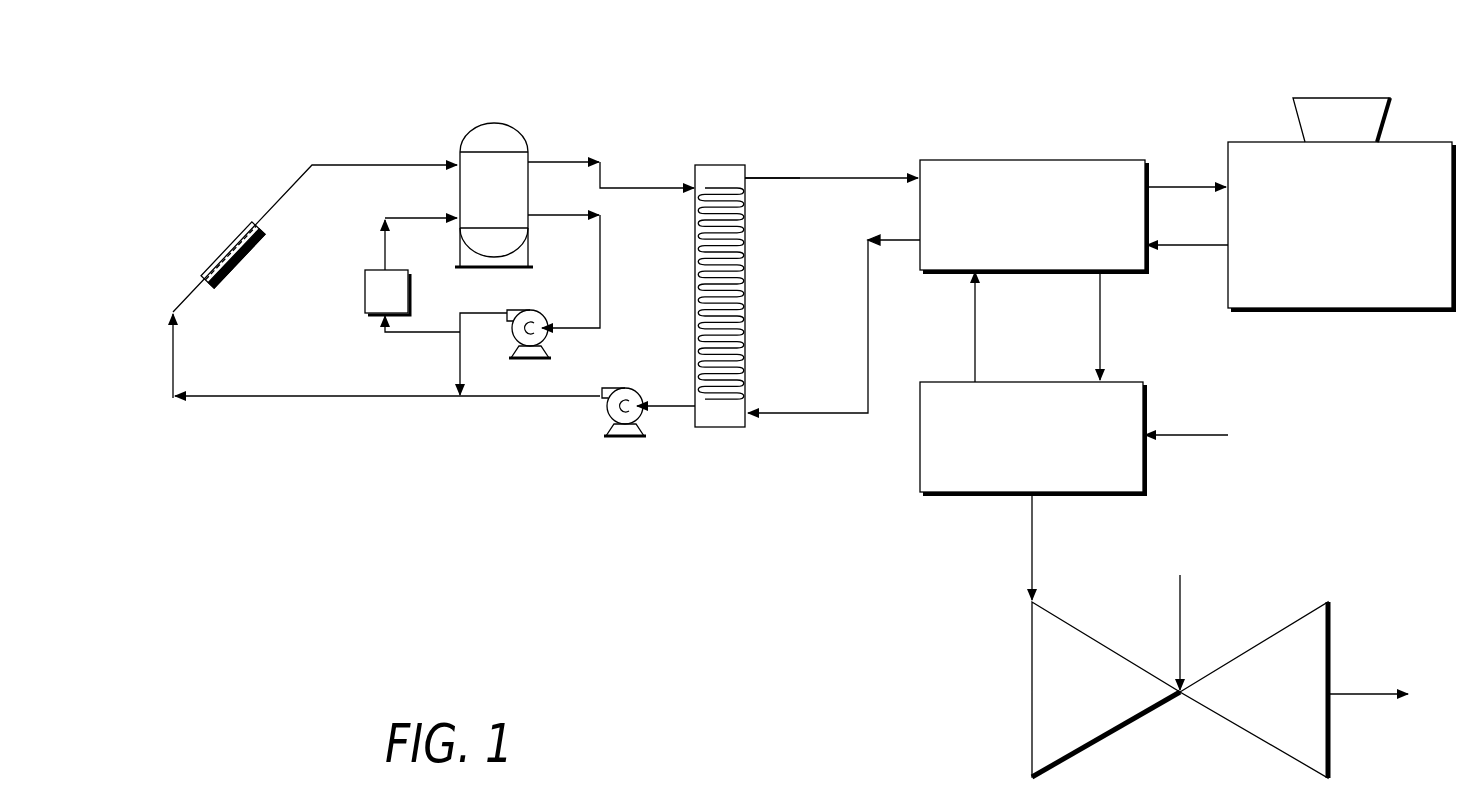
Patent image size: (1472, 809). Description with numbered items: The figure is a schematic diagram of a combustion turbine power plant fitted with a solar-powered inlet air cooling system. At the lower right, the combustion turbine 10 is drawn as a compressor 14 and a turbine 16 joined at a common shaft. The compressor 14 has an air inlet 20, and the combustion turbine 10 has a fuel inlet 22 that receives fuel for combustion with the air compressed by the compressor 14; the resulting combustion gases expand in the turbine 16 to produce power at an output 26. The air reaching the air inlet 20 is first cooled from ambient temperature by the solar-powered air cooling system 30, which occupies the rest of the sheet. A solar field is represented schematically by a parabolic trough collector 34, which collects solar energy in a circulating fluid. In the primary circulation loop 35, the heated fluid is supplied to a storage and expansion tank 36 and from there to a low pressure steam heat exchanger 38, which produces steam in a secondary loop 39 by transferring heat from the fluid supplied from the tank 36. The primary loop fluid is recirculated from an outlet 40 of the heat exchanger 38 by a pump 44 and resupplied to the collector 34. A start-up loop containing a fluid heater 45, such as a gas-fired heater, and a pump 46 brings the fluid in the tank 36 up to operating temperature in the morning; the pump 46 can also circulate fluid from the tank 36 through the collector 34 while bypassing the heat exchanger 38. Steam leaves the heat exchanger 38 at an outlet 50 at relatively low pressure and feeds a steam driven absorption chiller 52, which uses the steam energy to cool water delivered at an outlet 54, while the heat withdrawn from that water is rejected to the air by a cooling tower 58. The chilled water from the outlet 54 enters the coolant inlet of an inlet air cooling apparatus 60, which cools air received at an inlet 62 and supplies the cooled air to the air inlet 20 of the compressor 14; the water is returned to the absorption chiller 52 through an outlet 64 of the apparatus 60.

The combustion turbine 10 is at (948, 717).
The compressor 14 is at (1032, 659).
The turbine 16 is at (1248, 733).
The air inlet 20 is at (1033, 585).
The fuel inlet 22 is at (1180, 638).
The output 26 is at (1360, 693).
The solar-powered air cooling system 30 is at (822, 88).
The parabolic trough collector 34 is at (225, 249).
The primary circulation loop 35 is at (367, 163).
The storage and expansion tank 36 is at (462, 185).
The low pressure steam heat exchanger 38 is at (718, 165).
The secondary loop 39 is at (855, 177).
The outlet 40 is at (685, 408).
The pump 44 is at (607, 420).
The fluid heater 45 is at (365, 288).
The pump 46 is at (540, 351).
The outlet 50 is at (757, 178).
The steam driven absorption chiller 52 is at (987, 158).
The outlet 54 is at (1100, 322).
The cooling tower 58 is at (1262, 142).
The inlet air cooling apparatus 60 is at (975, 494).
The inlet 62 is at (1185, 435).
The outlet 64 is at (975, 335).